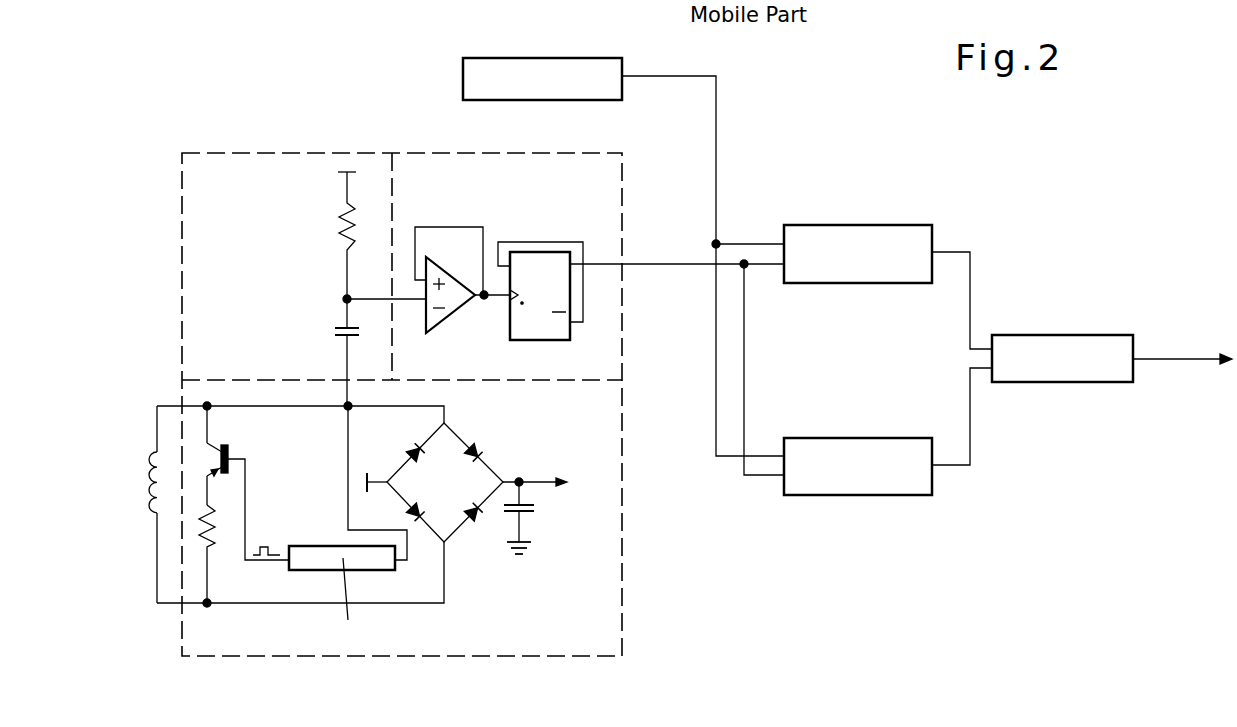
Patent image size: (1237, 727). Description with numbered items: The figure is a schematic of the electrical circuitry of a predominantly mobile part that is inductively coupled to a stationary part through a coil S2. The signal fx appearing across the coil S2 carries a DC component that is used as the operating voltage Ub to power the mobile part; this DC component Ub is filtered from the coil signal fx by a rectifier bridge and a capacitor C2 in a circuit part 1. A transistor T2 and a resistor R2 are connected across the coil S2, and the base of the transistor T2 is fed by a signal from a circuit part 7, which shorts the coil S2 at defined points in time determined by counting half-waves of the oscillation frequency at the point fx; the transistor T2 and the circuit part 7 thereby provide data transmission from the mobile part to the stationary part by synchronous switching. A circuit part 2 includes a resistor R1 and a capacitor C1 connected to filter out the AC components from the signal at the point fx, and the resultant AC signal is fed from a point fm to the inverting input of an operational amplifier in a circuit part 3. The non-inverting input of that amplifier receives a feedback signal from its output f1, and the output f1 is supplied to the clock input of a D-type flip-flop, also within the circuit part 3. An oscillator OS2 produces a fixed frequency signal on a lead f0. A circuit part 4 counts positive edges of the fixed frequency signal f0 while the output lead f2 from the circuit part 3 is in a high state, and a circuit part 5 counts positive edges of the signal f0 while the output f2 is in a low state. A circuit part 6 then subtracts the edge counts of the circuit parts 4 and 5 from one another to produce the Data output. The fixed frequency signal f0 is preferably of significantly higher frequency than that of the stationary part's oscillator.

The circuit part 1 is at (474, 475).
The circuit part 2 is at (306, 284).
The circuit part 3 is at (499, 251).
The circuit part 4 is at (888, 287).
The circuit part 5 is at (888, 431).
The circuit part 6 is at (1112, 354).
The circuit part 7 is at (297, 529).
The oscillator OS2 is at (542, 65).
The lead f0 is at (703, 254).
The output f1 is at (485, 318).
The output lead f2 is at (677, 351).
The point fm is at (369, 293).
The signal fx is at (360, 481).
The resistor R1 is at (326, 235).
The capacitor C1 is at (331, 352).
The resistor R2 is at (222, 554).
The transistor T2 is at (248, 483).
The coil S2 is at (136, 504).
The capacitor C2 is at (531, 518).
The operating voltage Ub is at (542, 500).
The inverted data output Data is at (1197, 326).